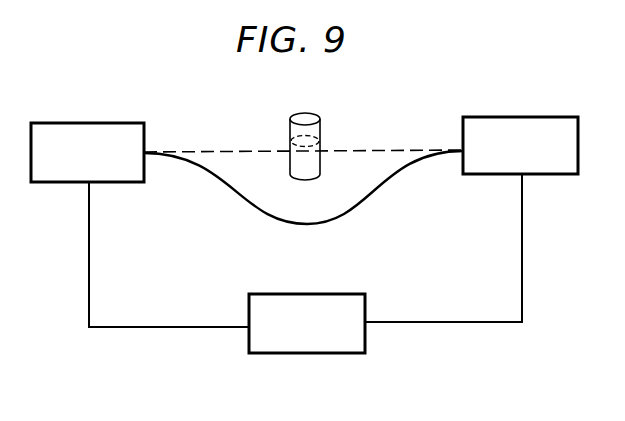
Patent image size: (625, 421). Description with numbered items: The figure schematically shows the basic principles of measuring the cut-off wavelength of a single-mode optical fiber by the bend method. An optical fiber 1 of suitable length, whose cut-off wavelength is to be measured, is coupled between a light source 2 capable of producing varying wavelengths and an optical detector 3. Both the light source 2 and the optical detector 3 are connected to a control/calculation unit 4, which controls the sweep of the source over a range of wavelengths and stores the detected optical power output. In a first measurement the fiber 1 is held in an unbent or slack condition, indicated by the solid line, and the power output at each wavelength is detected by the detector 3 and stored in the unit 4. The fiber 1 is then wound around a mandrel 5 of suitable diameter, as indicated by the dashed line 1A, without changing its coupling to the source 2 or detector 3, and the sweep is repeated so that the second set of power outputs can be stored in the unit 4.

The optical fiber 1 is at (228, 183).
The dashed line 1A is at (400, 150).
The light source 2 is at (142, 123).
The optical detector 3 is at (514, 117).
The control/calculation unit 4 is at (365, 337).
The mandrel 5 is at (313, 116).